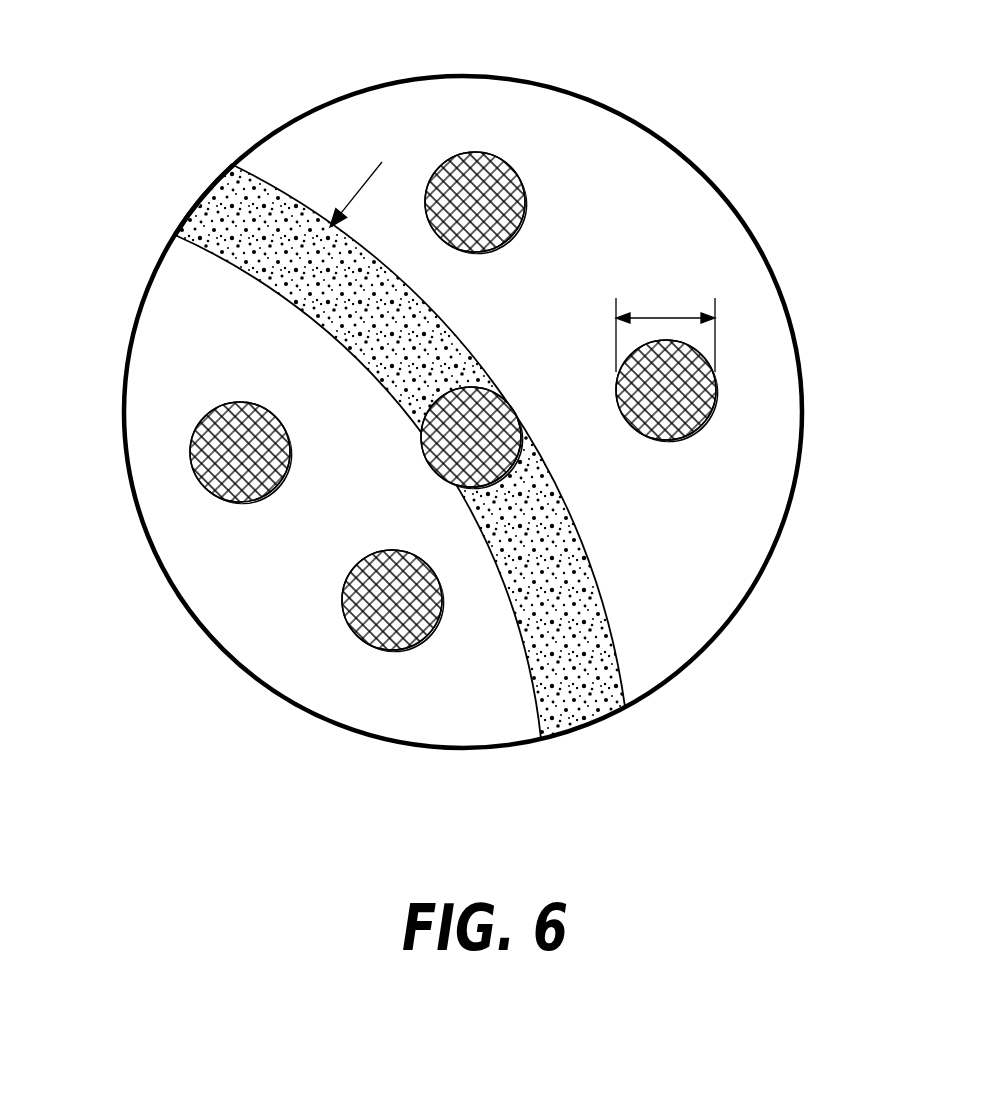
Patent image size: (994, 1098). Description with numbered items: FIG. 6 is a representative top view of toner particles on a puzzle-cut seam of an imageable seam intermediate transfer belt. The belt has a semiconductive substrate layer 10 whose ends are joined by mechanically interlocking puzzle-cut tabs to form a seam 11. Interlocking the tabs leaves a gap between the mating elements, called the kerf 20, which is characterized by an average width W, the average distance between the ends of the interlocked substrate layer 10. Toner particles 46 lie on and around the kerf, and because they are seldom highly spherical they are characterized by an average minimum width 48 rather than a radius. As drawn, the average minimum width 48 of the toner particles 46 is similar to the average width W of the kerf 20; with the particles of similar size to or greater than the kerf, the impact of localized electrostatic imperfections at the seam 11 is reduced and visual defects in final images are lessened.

The semiconductive substrate layer 10 is at (657, 157).
The seam 11 is at (197, 181).
The kerf 20 is at (577, 715).
The toner particles 46 is at (472, 153).
The average minimum width 48 is at (667, 315).
The average width W is at (263, 307).